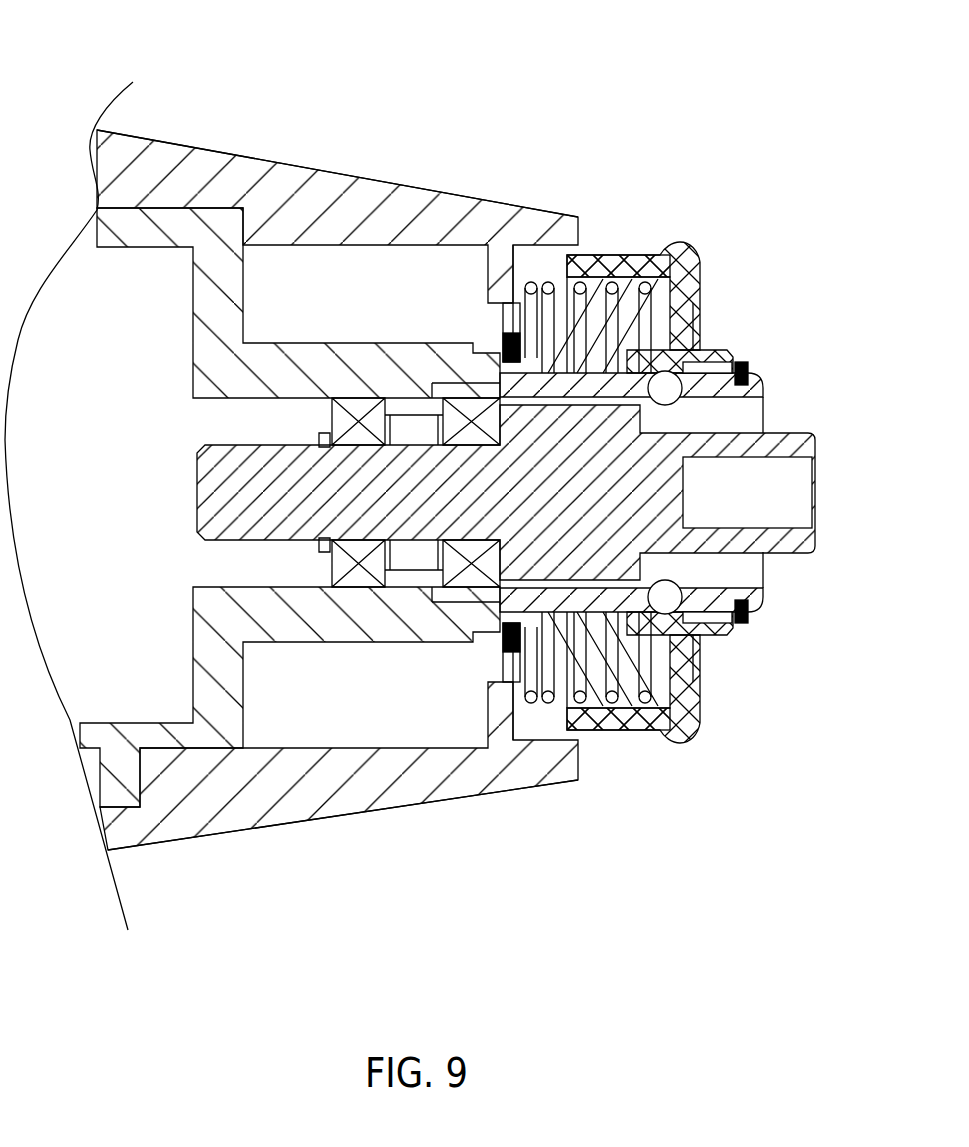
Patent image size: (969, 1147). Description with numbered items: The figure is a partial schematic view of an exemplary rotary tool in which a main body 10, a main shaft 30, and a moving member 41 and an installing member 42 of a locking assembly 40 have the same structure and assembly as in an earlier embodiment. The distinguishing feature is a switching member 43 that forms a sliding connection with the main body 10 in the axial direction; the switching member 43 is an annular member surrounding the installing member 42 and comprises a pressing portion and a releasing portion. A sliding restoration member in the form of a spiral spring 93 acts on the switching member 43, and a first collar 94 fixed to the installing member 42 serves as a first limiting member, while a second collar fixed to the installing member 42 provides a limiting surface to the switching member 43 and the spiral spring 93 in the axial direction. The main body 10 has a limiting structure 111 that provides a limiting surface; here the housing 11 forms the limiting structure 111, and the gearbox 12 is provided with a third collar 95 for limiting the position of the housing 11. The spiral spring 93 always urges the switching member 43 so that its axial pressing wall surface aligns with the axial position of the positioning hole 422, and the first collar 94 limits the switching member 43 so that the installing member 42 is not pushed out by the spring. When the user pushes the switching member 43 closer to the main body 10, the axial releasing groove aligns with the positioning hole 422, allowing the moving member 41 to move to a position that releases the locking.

The main body 10 is at (203, 157).
The housing 11 is at (305, 195).
The limiting structure 111 is at (500, 290).
The gearbox 12 is at (147, 232).
The main shaft 30 is at (230, 490).
The locking assembly 40 is at (693, 257).
The moving member 41 is at (700, 347).
The installing member 42 is at (620, 287).
The switching member 43 is at (603, 260).
The positioning hole 422 is at (717, 356).
The spiral spring 93 is at (613, 730).
The first collar 94 is at (742, 623).
The third collar 95 is at (527, 703).